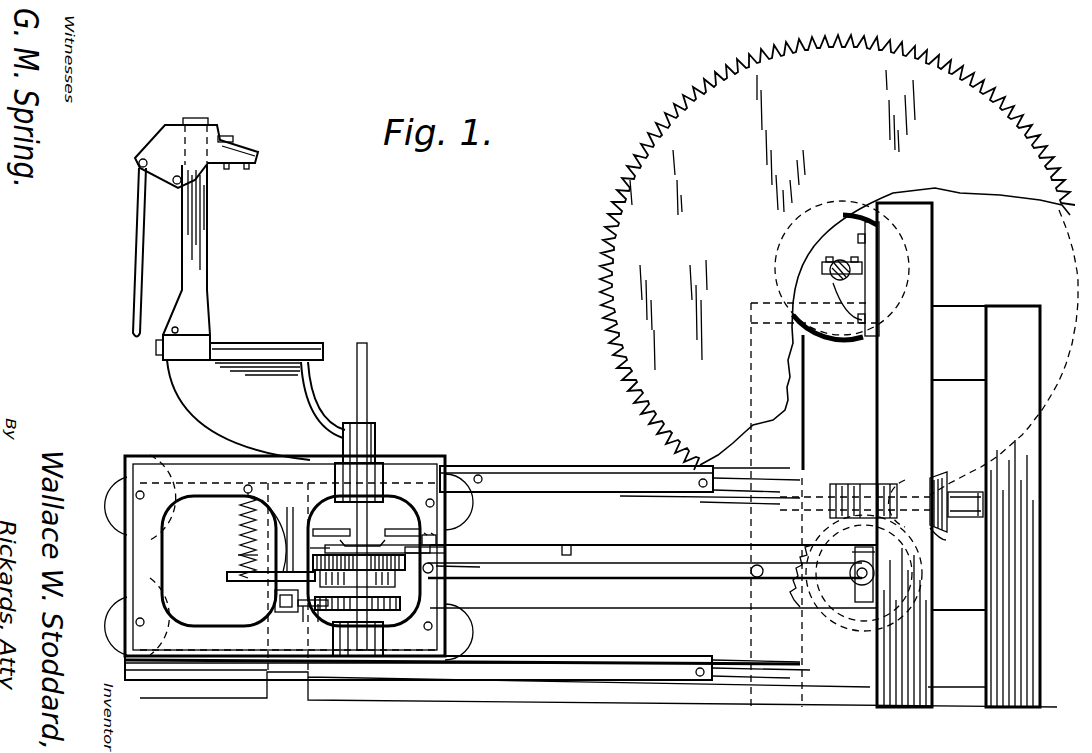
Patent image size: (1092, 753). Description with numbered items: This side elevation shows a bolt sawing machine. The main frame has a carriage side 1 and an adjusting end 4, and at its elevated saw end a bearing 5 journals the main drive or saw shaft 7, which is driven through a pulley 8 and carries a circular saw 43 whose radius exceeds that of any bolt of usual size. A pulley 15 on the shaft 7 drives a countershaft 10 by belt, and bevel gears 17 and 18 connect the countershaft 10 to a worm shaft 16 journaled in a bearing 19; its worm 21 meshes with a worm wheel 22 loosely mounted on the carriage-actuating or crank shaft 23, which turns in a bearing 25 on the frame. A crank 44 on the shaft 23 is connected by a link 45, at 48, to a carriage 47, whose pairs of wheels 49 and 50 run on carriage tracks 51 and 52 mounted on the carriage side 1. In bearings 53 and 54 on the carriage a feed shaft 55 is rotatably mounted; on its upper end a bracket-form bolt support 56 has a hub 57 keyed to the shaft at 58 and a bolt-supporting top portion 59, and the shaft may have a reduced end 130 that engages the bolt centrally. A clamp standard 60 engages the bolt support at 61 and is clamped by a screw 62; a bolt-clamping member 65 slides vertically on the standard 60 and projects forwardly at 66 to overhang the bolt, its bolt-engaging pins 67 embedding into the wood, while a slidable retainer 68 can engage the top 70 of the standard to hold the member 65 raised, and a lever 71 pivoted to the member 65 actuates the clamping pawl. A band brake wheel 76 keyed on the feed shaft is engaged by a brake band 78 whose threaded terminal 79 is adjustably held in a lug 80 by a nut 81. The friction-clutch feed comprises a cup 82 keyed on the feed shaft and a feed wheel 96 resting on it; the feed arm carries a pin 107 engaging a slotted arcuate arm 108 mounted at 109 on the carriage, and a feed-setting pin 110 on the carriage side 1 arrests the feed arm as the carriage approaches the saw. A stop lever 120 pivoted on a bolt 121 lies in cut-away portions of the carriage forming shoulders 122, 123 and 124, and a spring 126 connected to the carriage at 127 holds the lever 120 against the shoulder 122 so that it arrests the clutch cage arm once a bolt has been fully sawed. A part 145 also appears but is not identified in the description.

The carriage side 1 is at (586, 495).
The adjusting end 4 is at (371, 536).
The bearing 5 is at (858, 294).
The main drive or saw shaft 7 is at (840, 262).
The pulley 8 is at (826, 208).
The countershaft 10 is at (932, 500).
The pulley 15 is at (841, 336).
The worm shaft 16 is at (966, 494).
The bevel gear 17 is at (946, 524).
The bevel gear 18 is at (948, 490).
The bearing 19 is at (961, 511).
The worm 21 is at (851, 481).
The worm wheel 22 is at (800, 588).
The carriage-actuating or crank shaft 23 is at (858, 564).
The bearing 25 is at (872, 569).
The circular saw 43 is at (605, 298).
The crank 44 is at (776, 576).
The link 45 is at (648, 574).
The carriage 47 is at (137, 556).
The link connection 48 is at (497, 574).
The wheels 49 is at (100, 620).
The wheels 50 is at (114, 506).
The carriage track 51 is at (552, 662).
The carriage track 52 is at (510, 468).
The bearing 53 is at (372, 660).
The bearing 54 is at (372, 469).
The feed shaft 55 is at (360, 540).
The bolt support 56 is at (196, 406).
The hub 57 is at (370, 426).
The key 58 is at (336, 422).
The bolt-supporting top portion 59 is at (276, 343).
The clamp standard 60 is at (200, 284).
The standard engagement 61 is at (170, 356).
The screw 62 is at (170, 329).
The bolt-clamping member 65 is at (168, 148).
The forwardly projecting portion 66 is at (243, 157).
The bolt-engaging pins 67 is at (246, 166).
The slidable retainer 68 is at (232, 138).
The top of the standard 70 is at (200, 120).
The lever 71 is at (137, 229).
The band brake wheel 76 is at (390, 656).
The brake band 78 is at (316, 604).
The threaded terminal 79 is at (300, 606).
The lug 80 is at (280, 612).
The nut 81 is at (274, 598).
The cup 82 is at (418, 634).
The feed wheel 96 is at (435, 571).
The pin 107 is at (390, 507).
The slotted arcuate arm 108 is at (446, 551).
The mounting 109 is at (437, 540).
The arrester or feed-setting pin 110 is at (573, 545).
The stop lever 120 is at (227, 577).
The bolt 121 is at (271, 522).
The shoulder 122 is at (276, 545).
The shoulder 123 is at (310, 545).
The shoulder 124 is at (246, 555).
The spring 126 is at (246, 540).
The spring connection 127 is at (244, 488).
The reduced end 130 is at (370, 372).
The pin 145 is at (240, 582).